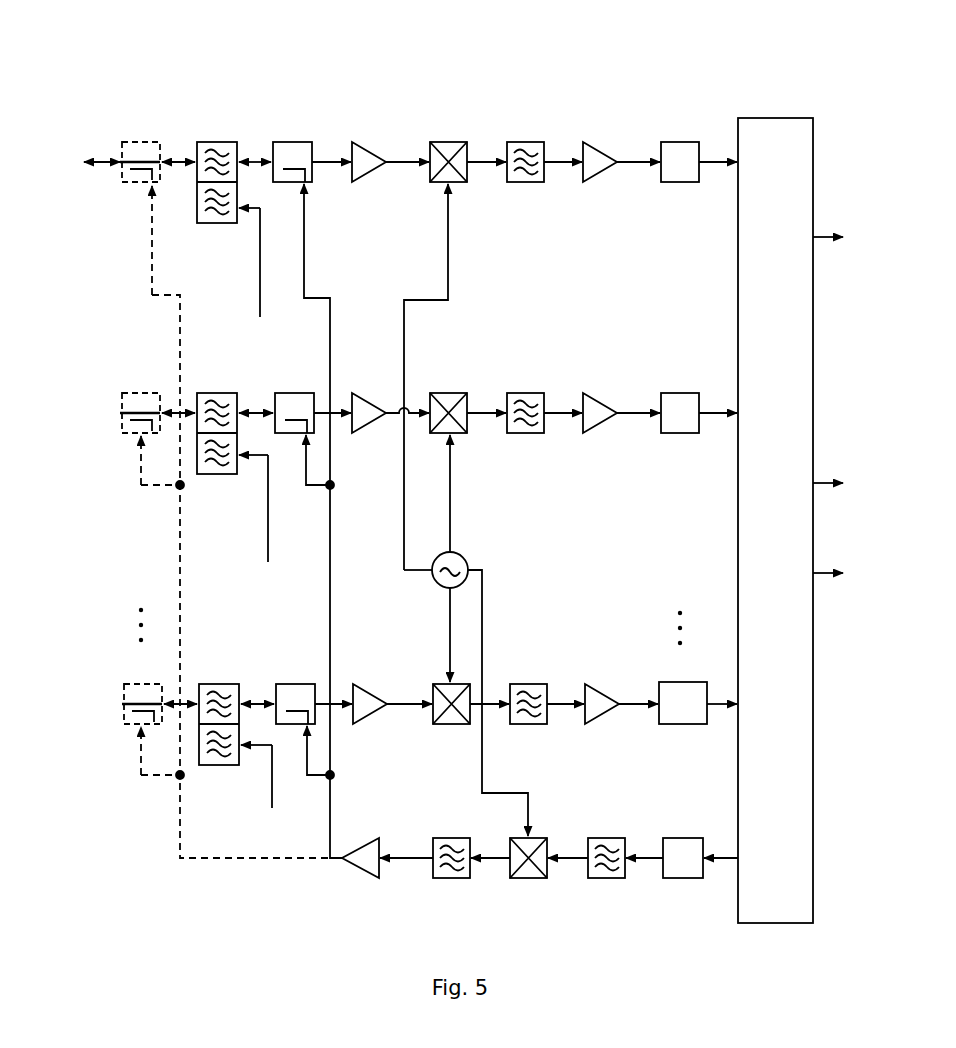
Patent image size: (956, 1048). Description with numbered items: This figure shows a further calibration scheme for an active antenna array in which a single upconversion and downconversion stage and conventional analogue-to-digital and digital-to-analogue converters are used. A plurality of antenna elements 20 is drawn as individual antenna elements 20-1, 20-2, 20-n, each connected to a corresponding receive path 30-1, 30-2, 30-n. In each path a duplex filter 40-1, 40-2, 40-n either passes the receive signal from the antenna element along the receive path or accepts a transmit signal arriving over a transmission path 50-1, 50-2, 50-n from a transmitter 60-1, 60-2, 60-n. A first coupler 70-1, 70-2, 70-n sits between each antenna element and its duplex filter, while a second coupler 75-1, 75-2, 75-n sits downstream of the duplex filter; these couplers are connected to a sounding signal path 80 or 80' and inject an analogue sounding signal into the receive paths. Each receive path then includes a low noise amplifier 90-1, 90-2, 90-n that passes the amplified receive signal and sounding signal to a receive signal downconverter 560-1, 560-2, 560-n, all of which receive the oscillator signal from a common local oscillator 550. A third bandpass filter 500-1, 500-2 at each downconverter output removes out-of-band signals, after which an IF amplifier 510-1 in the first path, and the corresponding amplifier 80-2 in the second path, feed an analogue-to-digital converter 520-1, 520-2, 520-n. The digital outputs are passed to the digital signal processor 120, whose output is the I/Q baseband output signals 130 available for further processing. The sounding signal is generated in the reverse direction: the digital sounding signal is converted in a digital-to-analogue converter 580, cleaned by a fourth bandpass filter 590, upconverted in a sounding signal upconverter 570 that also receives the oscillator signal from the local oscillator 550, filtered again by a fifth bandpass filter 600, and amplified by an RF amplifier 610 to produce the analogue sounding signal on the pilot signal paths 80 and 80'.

The antenna elements 20 is at (98, 86).
The antenna element 20-1 is at (76, 162).
The antenna element 20-2 is at (90, 414).
The antenna element 20-n is at (95, 705).
The first coupler 70-1 is at (140, 146).
The first coupler 70-2 is at (140, 401).
The first coupler 70-n is at (141, 689).
The duplex filter 40-1 is at (230, 142).
The duplex filter 40-2 is at (230, 393).
The duplex filter 40-n is at (232, 684).
The receive path 30-1 is at (252, 154).
The receive path 30-2 is at (255, 405).
The receive path 30-n is at (254, 696).
The transmission path 50-1 is at (258, 240).
The transmission path 50-2 is at (266, 490).
The transmission path 50-n is at (270, 774).
The transmitter 60-1 is at (260, 274).
The transmitter 60-2 is at (265, 520).
The transmitter 60-n is at (268, 789).
The second coupler 75-1 is at (313, 178).
The second coupler 75-2 is at (293, 437).
The second coupler 75-n is at (297, 728).
The low noise amplifier 90-1 is at (357, 149).
The low noise amplifier 90-2 is at (357, 402).
The low noise amplifier 90-n is at (355, 691).
The receive signal downconverter 560-1 is at (433, 146).
The receive signal downconverter 560-2 is at (434, 398).
The receive signal downconverter 560-n is at (433, 721).
The third bandpass filter 500-1 is at (521, 142).
The third bandpass filter 500-2 is at (521, 394).
The IF amplifier 510-1 is at (588, 146).
The IF amplifier 80-2 is at (586, 398).
The analogue-to-digital converter 520-1 is at (677, 146).
The analogue-to-digital converter 520-2 is at (677, 398).
The analogue-to-digital converter 520-n is at (642, 686).
The local oscillator 550 is at (466, 510).
The digital signal processor 120 is at (775, 520).
The I/Q base band output signals 130 is at (839, 405).
The digital-to-analogue converter 580 is at (700, 876).
The fourth bandpass filter 590 is at (625, 876).
The sounding signal upconverter 570 is at (548, 876).
The fifth bandpass filter 600 is at (471, 876).
The RF amplifier 610 is at (387, 876).
The sounding signal path 80 is at (347, 594).
The sounding signal path 80' is at (235, 538).